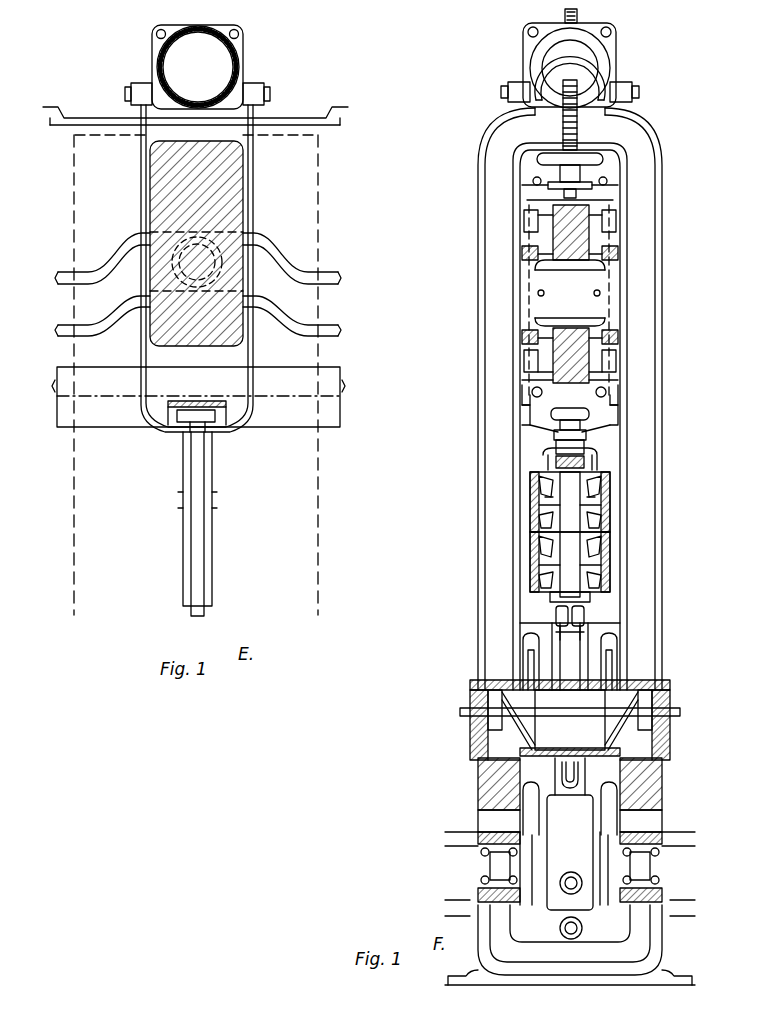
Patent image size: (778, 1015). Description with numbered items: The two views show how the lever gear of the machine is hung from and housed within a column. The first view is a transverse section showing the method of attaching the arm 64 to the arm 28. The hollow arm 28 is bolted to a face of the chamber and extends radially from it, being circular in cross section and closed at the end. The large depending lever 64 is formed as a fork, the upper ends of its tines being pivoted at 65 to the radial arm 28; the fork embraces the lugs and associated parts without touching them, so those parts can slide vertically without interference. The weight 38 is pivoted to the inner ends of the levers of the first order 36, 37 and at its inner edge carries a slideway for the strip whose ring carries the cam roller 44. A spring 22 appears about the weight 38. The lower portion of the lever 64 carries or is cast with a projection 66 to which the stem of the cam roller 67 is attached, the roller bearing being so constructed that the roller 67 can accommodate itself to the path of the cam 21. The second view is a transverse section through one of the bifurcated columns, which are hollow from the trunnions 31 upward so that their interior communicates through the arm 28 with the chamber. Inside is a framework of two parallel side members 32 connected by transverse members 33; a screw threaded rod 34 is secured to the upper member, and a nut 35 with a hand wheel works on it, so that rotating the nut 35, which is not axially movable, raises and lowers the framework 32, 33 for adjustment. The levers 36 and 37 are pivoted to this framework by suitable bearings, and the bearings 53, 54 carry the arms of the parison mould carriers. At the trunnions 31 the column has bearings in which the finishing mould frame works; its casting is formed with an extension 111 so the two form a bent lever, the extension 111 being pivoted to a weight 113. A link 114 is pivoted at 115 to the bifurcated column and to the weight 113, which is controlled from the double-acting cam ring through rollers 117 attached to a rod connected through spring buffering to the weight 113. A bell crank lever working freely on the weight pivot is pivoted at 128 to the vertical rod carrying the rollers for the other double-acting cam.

In FIG. 1E, the cam 21 is at (284, 424).
In FIG. 1E, the spring 22 is at (300, 271).
In FIG. 1E, the hollow arm 28 is at (208, 73).
In FIG. 1F, the hollow arm 28 is at (585, 68).
In FIG. 1F, the trunnions 31 is at (670, 696).
In FIG. 1F, the side members 32 is at (527, 292).
In FIG. 1F, the transverse members 33 is at (570, 294).
In FIG. 1F, the screw threaded rod 34 is at (578, 127).
In FIG. 1F, the nut 35 is at (577, 172).
In FIG. 1F, the lever of the first order 36 is at (590, 231).
In FIG. 1F, the lever of the first order 37 is at (586, 362).
In FIG. 1E, the weight 38 is at (232, 210).
In FIG. 1E, the cam roller 44 is at (245, 236).
In FIG. 1F, the bearing 53 is at (610, 512).
In FIG. 1F, the bearing 54 is at (610, 563).
In FIG. 1E, the depending lever 64 is at (253, 352).
In FIG. 1E, the pivot 65 is at (262, 95).
In FIG. 1E, the projection 66 is at (205, 551).
In FIG. 1E, the cam roller 67 is at (212, 432).
In FIG. 1F, the extension 111 is at (530, 652).
In FIG. 1F, the weight 113 is at (570, 834).
In FIG. 1F, the link 114 is at (527, 798).
In FIG. 1F, the pivot 115 is at (476, 862).
In FIG. 1F, the rollers 117 is at (582, 928).
In FIG. 1F, the pivot 128 is at (585, 617).